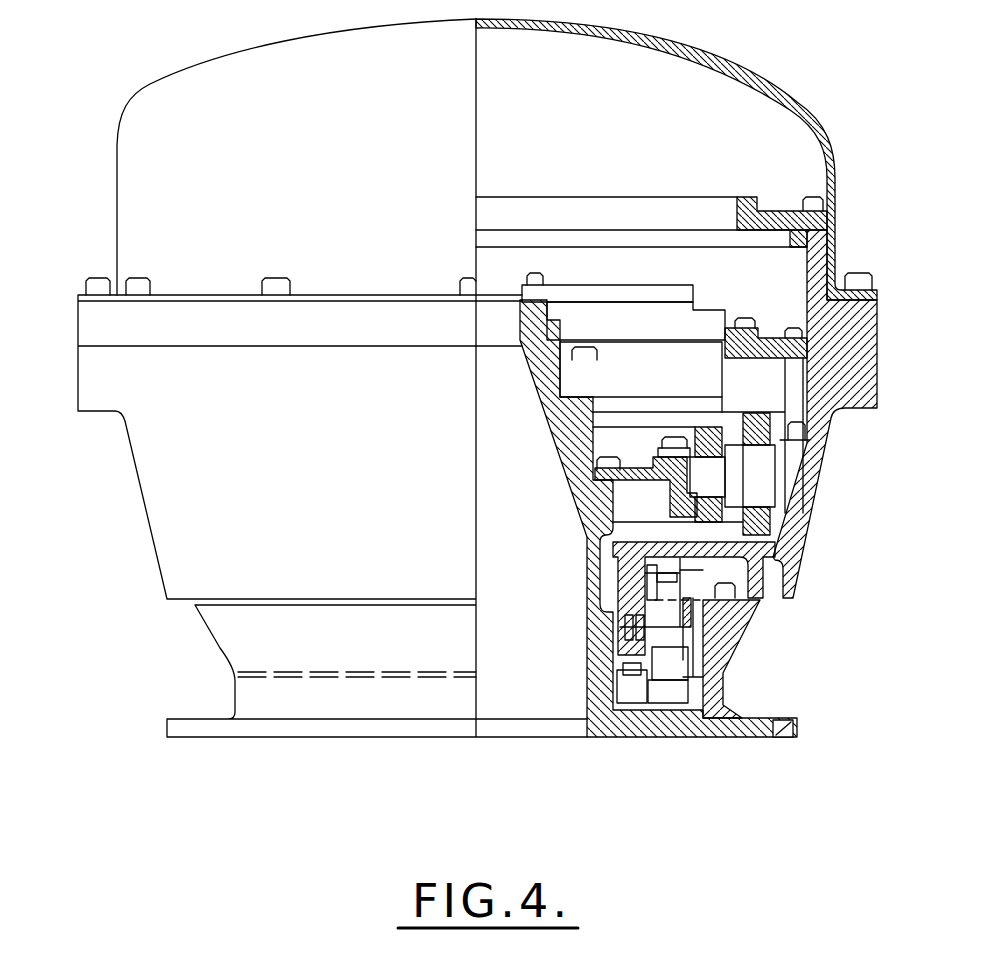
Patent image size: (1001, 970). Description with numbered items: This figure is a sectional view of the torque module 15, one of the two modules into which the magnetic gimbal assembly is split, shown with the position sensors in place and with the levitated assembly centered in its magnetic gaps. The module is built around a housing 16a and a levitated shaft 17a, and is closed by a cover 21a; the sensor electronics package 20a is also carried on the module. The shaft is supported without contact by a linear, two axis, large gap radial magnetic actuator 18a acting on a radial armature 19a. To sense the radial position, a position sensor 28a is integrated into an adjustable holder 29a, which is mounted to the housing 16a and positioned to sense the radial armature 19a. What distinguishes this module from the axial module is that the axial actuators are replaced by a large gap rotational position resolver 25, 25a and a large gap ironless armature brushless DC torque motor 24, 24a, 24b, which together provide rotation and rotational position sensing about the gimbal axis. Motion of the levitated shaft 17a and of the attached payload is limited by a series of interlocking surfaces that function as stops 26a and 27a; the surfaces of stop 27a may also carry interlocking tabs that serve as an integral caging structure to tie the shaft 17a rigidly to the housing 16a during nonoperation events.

The torque module 15 is at (130, 558).
The cover 21a is at (742, 60).
The sensor electronics package 20a is at (757, 200).
The torque motor 24b is at (662, 285).
The torque motor 24a is at (725, 310).
The torque motor 24 is at (722, 378).
The rotational position resolver 25a is at (725, 474).
The rotational position resolver 25 is at (775, 496).
The housing 16a is at (808, 524).
The stop 27a is at (806, 565).
The stop 26a is at (581, 589).
The shaft 17a is at (744, 633).
The radial armature 19a is at (702, 677).
The radial magnetic actuator 18a is at (633, 703).
The position sensor 28a is at (690, 678).
The adjustable holder 29a is at (657, 702).